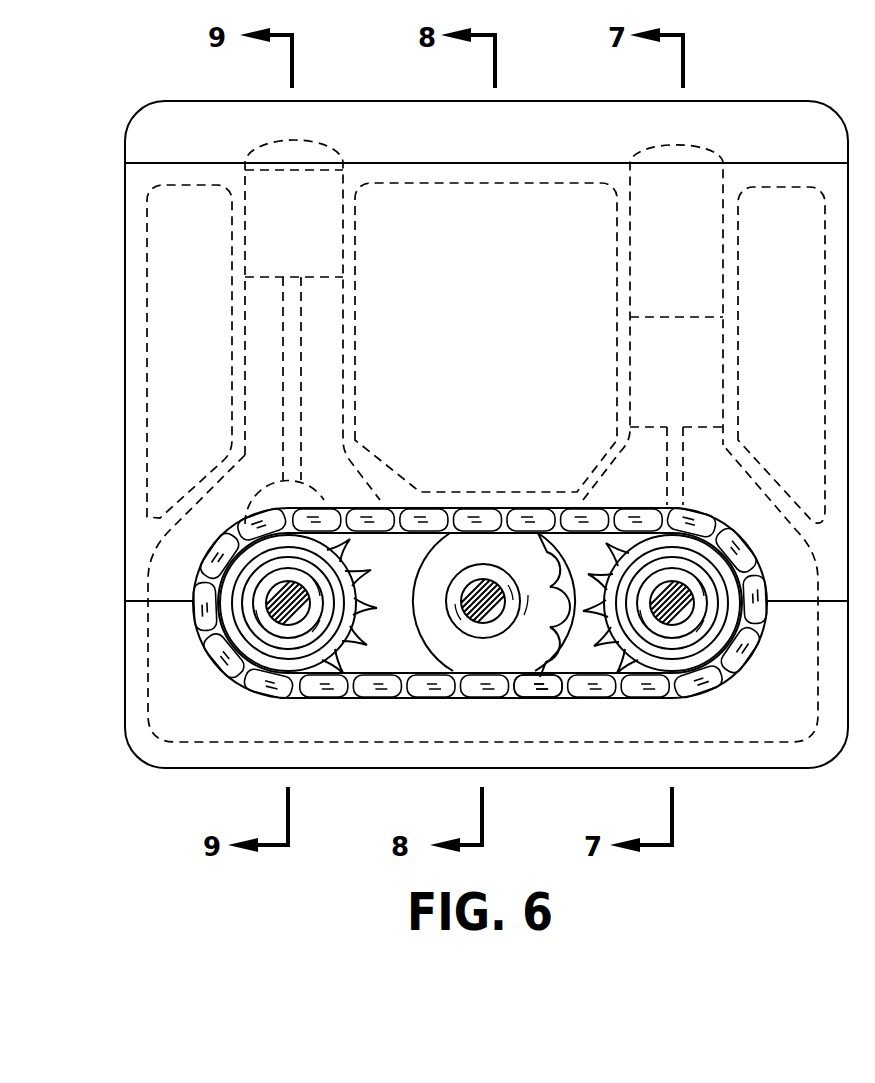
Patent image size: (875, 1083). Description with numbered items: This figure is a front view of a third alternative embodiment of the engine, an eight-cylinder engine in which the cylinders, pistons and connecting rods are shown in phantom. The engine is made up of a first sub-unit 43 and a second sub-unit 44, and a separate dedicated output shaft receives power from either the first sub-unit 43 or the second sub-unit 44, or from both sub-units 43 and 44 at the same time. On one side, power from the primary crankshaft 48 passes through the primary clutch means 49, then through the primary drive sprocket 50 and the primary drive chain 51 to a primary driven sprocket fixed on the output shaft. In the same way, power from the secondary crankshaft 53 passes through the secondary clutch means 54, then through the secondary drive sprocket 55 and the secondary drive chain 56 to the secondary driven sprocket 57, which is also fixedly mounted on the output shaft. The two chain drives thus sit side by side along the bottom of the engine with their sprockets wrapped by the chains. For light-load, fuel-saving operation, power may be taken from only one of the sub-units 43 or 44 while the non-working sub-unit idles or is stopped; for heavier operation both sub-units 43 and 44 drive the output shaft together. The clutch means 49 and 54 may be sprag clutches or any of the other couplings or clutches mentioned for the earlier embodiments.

The first sub-unit 43 is at (194, 531).
The second sub-unit 44 is at (690, 494).
The primary crankshaft 48 is at (278, 615).
The primary clutch means 49 is at (243, 618).
The primary drive sprocket 50 is at (360, 650).
The primary drive chain 51 is at (407, 693).
The secondary crankshaft 53 is at (687, 613).
The secondary clutch means 54 is at (682, 648).
The secondary drive sprocket 55 is at (607, 650).
The secondary drive chain 56 is at (553, 688).
The secondary driven sprocket 57 is at (512, 650).